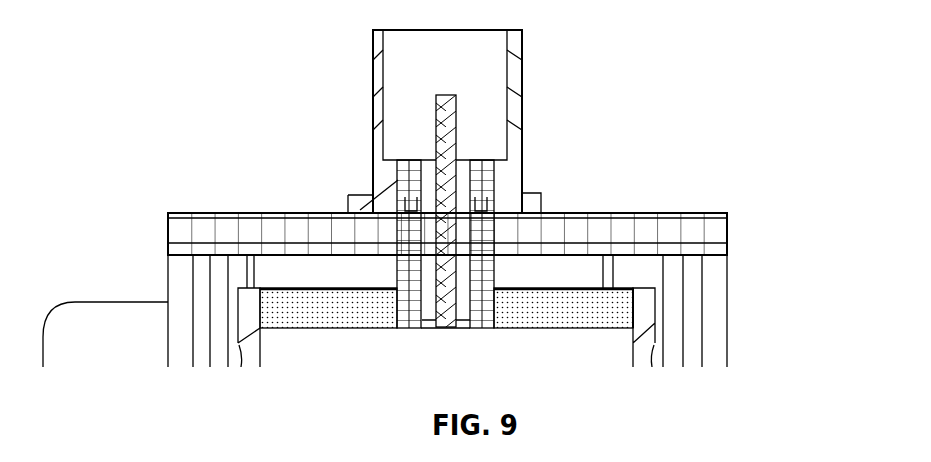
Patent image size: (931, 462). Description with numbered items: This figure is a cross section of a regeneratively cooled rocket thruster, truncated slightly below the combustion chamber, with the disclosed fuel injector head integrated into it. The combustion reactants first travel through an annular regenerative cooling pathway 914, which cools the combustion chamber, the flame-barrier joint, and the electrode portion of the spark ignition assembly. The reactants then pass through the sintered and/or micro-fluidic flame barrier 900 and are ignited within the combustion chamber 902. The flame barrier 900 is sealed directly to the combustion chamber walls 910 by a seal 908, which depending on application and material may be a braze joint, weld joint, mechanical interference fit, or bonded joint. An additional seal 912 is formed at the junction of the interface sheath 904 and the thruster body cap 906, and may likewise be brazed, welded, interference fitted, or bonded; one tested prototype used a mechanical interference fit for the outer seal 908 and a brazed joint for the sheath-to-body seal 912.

The sintered and/or micro-fluidic flame barrier 900 is at (553, 303).
The combustion chamber 902 is at (357, 355).
The interface sheath 904 is at (387, 200).
The thruster body cap 906 is at (295, 230).
The seal 908 is at (637, 290).
The combustion chamber walls 910 is at (650, 300).
The seal 912 is at (393, 210).
The annular regenerative cooling pathway 914 is at (233, 317).